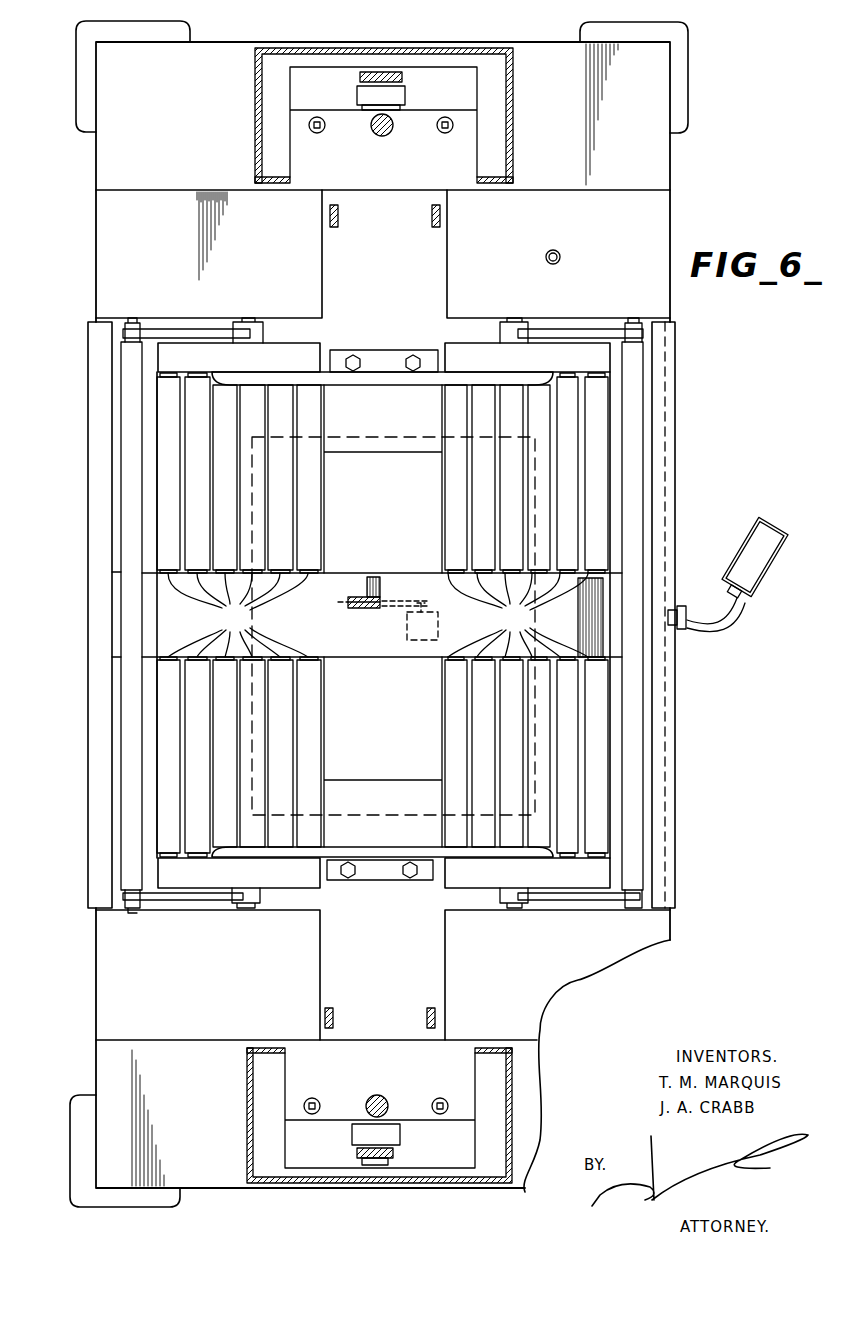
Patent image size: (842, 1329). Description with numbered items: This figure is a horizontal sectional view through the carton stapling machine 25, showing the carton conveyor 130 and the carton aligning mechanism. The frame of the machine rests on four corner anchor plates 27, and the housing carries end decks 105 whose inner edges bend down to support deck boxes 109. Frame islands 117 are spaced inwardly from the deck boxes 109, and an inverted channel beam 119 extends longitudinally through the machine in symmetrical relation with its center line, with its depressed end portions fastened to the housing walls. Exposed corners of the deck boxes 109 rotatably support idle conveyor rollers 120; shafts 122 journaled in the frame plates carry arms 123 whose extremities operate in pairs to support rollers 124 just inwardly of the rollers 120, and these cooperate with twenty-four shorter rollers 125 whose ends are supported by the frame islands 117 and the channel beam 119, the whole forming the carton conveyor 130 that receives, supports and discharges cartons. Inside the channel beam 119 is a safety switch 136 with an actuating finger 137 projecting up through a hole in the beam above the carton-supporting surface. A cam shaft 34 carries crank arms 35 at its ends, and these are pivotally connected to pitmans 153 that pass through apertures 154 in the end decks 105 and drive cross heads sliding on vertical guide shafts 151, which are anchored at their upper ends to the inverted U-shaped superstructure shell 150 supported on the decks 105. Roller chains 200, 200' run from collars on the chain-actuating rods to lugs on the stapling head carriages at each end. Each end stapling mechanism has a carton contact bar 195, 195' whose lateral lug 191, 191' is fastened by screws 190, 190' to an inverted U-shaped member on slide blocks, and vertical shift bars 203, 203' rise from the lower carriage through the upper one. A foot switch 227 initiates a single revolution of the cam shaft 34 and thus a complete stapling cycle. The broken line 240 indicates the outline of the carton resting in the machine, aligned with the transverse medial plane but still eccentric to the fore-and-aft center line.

The carton stapling machine 25 is at (692, 167).
The corner anchor plates 27 is at (78, 52).
The cam shaft 34 is at (394, 109).
The crank arms 35 is at (402, 96).
The end decks 105 is at (112, 152).
The deck boxes 109 is at (112, 229).
The frame islands 117 is at (287, 356).
The inverted channel beam 119 is at (335, 588).
The idle conveyor rollers 120 is at (96, 487).
The shafts 122 is at (246, 322).
The arms 123 is at (180, 330).
The rollers 124 is at (130, 604).
The shorter rollers 125 is at (382, 615).
The carton conveyor 130 is at (680, 340).
The safety switch 136 is at (418, 642).
The actuating finger 137 is at (358, 606).
The super structure 150 is at (510, 90).
The vertical guide shafts 151 is at (382, 137).
The pitmans 153 is at (378, 72).
The apertures 154 is at (328, 68).
The screws 190 is at (380, 887).
The bolt block 190' is at (384, 347).
The lug 191 is at (406, 911).
The bolt 191' is at (423, 323).
The carton contact bar 195 is at (382, 843).
The cross bar 195' is at (382, 395).
The roller chains 200 is at (374, 1088).
The pin 200' is at (377, 143).
The shift bars 203 is at (380, 1007).
The bracket 203' is at (385, 231).
The foot switch 227 is at (766, 535).
The broken line 240 is at (557, 776).